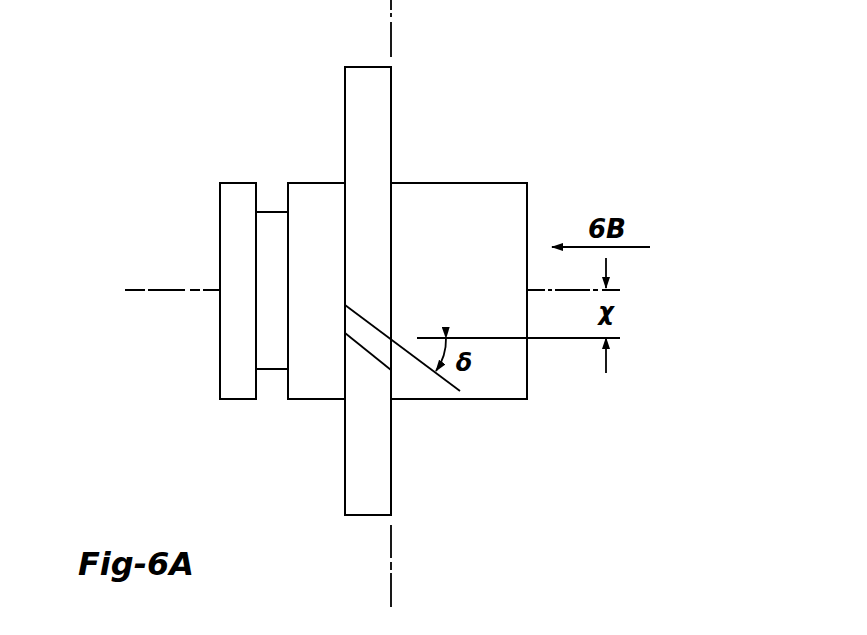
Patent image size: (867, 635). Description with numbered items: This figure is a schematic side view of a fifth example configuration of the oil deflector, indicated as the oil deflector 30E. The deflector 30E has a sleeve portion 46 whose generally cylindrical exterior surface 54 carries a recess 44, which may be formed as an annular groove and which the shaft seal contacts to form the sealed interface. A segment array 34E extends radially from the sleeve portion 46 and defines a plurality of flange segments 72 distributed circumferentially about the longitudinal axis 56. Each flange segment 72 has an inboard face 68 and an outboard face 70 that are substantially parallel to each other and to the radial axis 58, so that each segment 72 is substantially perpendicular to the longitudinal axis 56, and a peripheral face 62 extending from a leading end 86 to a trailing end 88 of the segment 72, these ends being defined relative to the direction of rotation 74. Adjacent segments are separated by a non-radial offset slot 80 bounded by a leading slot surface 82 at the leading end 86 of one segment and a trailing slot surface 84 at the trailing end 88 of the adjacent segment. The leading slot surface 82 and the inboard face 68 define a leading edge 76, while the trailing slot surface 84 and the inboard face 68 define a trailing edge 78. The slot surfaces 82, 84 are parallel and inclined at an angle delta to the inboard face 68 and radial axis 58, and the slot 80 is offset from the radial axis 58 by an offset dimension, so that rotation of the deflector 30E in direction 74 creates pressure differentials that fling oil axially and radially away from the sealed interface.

The oil deflector 30E is at (697, 97).
The segment array 34E is at (298, 73).
The recess 44 is at (267, 393).
The sleeve portion 46 is at (218, 196).
The exterior surface 54 is at (513, 203).
The longitudinal axis 56 is at (131, 292).
The radial axis 58 is at (389, 597).
The peripheral face 62 is at (380, 90).
The inboard face 68 is at (393, 163).
The outboard face 70 is at (345, 112).
The flange segment 72 is at (415, 129).
The direction of rotation 74 is at (162, 316).
The leading edge 76 is at (395, 342).
The trailing edge 78 is at (388, 370).
The offset slot 80 is at (343, 322).
The leading slot surface 82 is at (363, 327).
The trailing slot surface 84 is at (368, 348).
The leading end 86 is at (403, 322).
The trailing end 88 is at (333, 340).